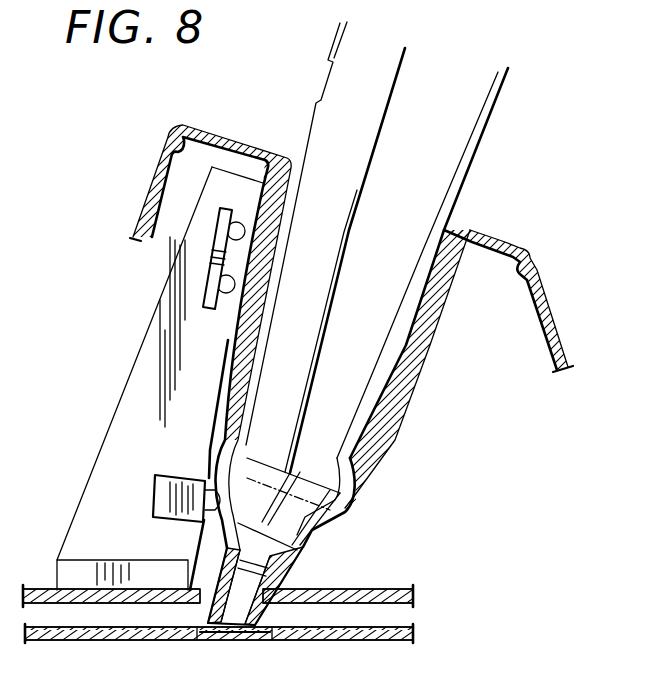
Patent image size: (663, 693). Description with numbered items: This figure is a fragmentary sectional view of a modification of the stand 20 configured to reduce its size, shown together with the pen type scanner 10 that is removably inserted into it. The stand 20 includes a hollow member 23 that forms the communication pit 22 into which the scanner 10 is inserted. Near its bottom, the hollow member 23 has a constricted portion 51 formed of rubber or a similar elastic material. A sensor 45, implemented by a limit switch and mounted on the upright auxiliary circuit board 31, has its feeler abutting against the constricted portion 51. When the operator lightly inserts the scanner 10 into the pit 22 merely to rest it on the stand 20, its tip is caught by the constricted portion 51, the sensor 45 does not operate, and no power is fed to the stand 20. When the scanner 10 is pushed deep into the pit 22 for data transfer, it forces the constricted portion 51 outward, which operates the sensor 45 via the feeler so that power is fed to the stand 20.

The scanner 10 is at (490, 165).
The stand 20 is at (139, 141).
The communication pit 22 is at (455, 225).
The hollow member 23 is at (400, 395).
The auxiliary circuit board 31 is at (143, 383).
The sensor 45 is at (165, 500).
The constricted portion 51 is at (312, 533).